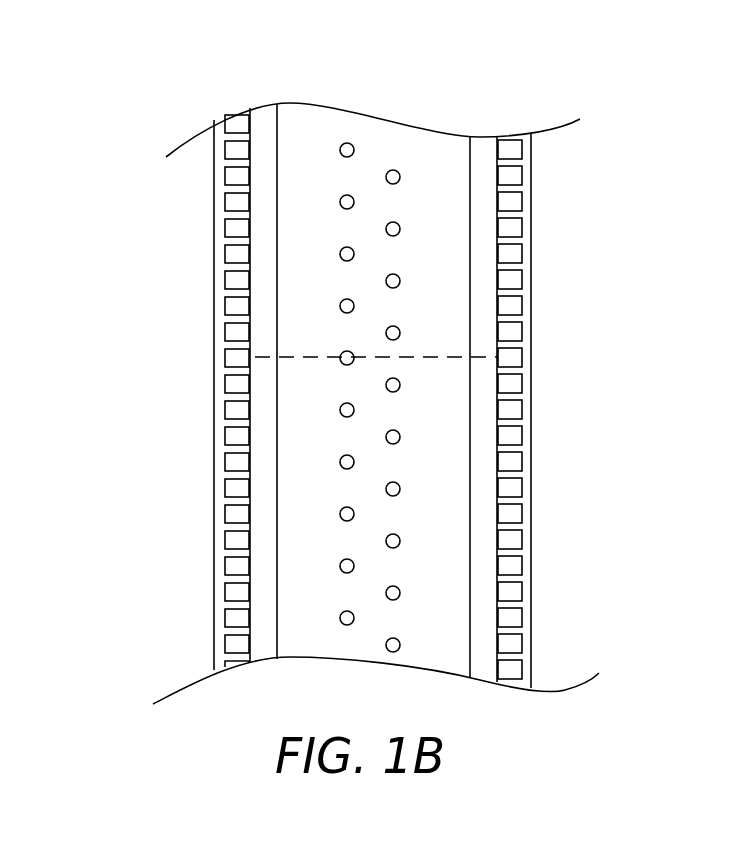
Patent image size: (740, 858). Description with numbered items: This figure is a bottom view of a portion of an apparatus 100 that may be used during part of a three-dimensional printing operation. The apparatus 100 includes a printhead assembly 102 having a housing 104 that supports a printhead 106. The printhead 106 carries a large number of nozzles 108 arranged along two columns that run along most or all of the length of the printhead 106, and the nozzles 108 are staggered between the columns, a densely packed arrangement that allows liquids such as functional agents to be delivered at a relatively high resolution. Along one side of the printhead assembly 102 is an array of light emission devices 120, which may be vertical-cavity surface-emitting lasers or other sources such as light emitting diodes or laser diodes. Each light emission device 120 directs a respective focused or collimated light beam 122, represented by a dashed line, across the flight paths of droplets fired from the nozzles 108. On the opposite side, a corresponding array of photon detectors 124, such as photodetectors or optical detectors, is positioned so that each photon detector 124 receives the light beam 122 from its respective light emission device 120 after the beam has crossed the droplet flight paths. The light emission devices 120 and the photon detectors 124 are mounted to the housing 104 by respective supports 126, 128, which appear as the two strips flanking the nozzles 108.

The apparatus 100 is at (182, 58).
The printhead assembly 102 is at (111, 227).
The housing 104 is at (531, 228).
The printhead 106 is at (325, 112).
The nozzles 108 is at (354, 144).
The light emission devices 120 is at (226, 354).
The light beam 122 is at (298, 358).
The photon detectors 124 is at (522, 359).
The support 126 is at (214, 567).
The support 128 is at (531, 548).